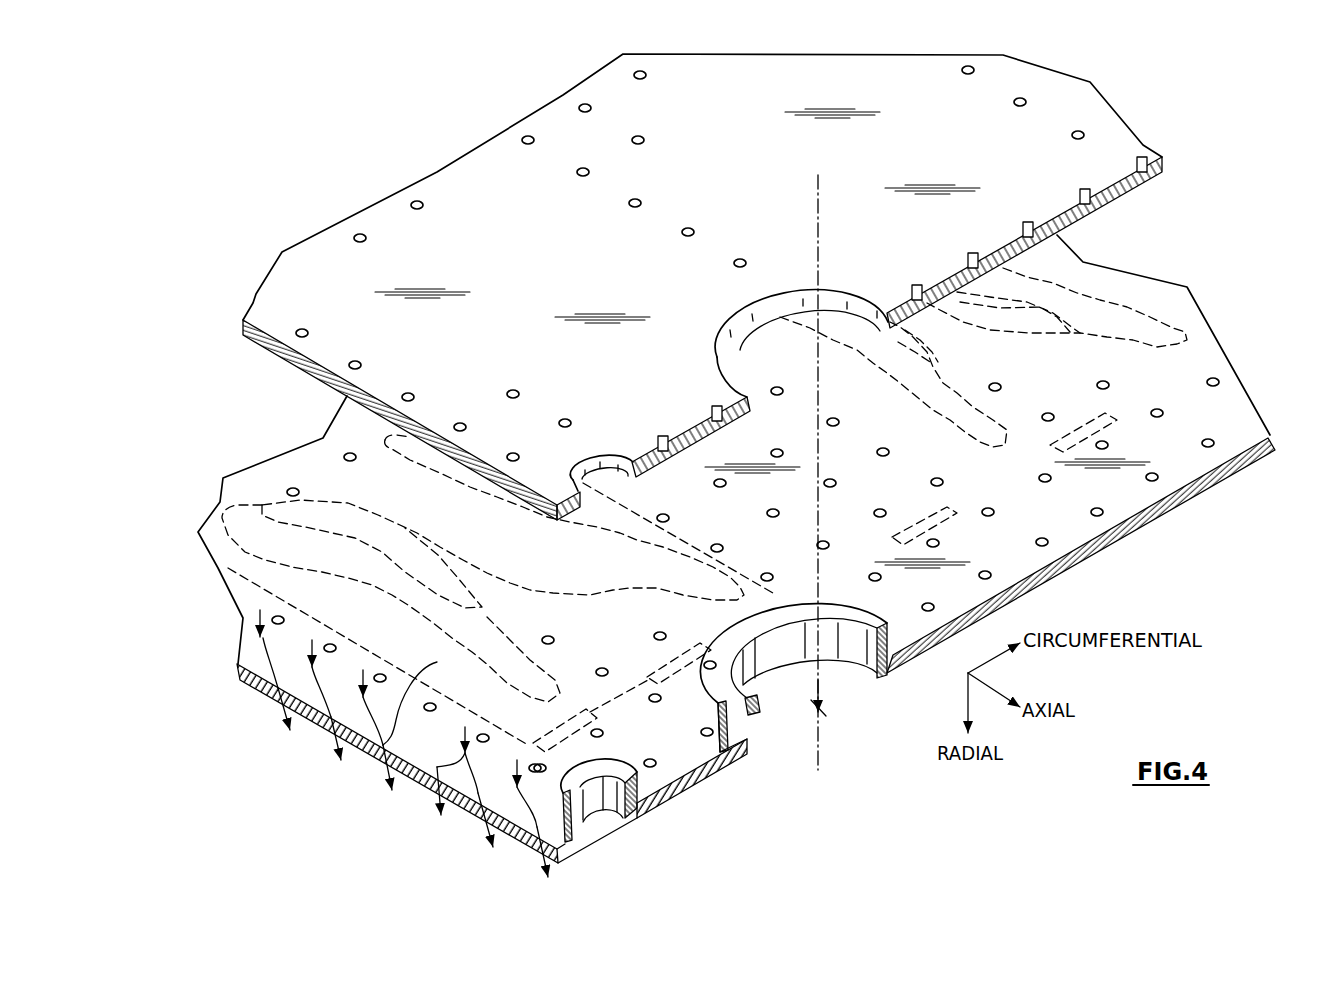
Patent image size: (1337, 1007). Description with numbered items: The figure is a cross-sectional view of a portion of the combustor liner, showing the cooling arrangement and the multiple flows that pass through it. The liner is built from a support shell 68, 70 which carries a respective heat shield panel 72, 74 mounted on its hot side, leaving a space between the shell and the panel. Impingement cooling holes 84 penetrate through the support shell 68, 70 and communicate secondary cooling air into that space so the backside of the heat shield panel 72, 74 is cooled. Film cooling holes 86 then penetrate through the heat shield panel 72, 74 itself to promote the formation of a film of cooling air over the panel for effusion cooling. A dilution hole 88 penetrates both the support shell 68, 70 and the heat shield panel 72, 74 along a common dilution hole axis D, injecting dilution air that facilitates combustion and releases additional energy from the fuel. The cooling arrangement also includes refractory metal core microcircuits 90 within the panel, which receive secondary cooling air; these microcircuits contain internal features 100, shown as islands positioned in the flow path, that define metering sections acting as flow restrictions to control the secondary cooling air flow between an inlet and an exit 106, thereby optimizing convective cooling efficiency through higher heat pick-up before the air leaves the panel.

The support shell 68 is at (709, 286).
The support shell 70 is at (709, 286).
The heat shield panel 72 is at (726, 526).
The heat shield panel 74 is at (726, 526).
The impingement cooling holes 84 is at (466, 420).
The film cooling holes 86 is at (431, 702).
The dilution hole 88 is at (860, 656).
The refractory metal core (RMC) microcircuits 90 is at (260, 590).
The internal features 100 is at (383, 440).
The exit 106 is at (603, 717).
The dilution hole axis D is at (819, 712).